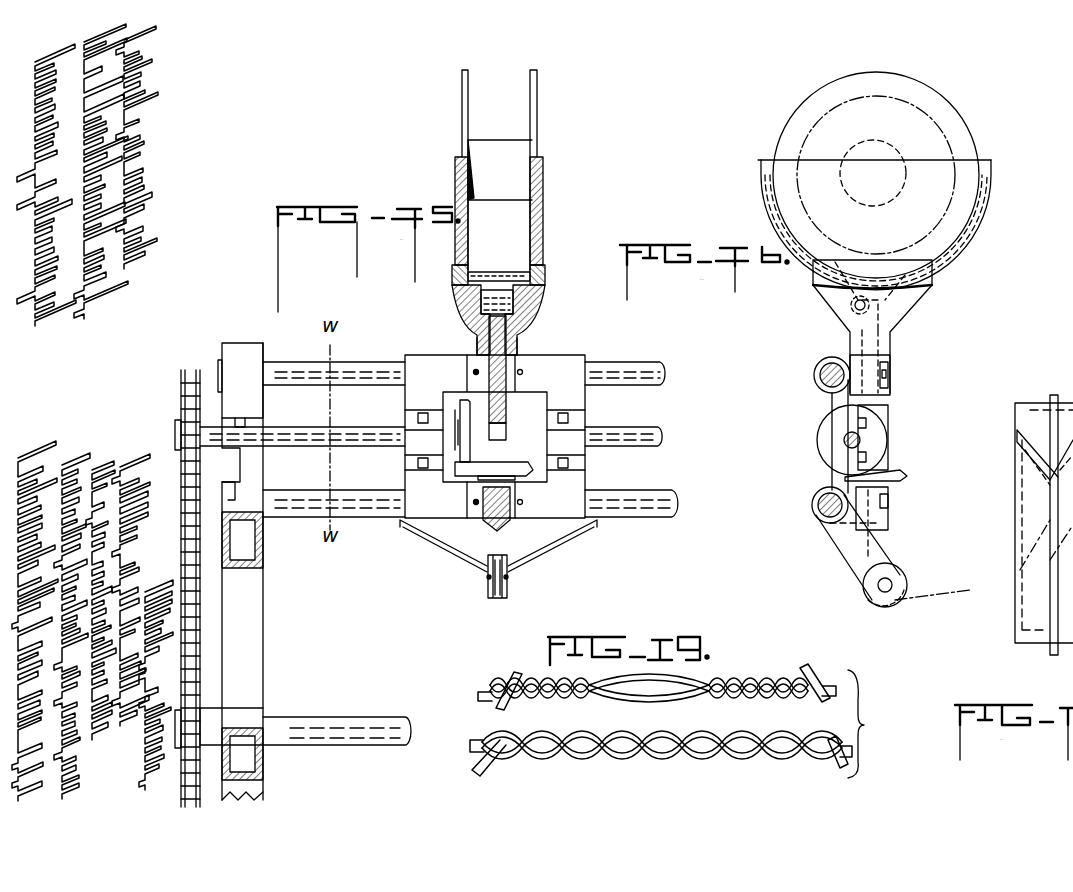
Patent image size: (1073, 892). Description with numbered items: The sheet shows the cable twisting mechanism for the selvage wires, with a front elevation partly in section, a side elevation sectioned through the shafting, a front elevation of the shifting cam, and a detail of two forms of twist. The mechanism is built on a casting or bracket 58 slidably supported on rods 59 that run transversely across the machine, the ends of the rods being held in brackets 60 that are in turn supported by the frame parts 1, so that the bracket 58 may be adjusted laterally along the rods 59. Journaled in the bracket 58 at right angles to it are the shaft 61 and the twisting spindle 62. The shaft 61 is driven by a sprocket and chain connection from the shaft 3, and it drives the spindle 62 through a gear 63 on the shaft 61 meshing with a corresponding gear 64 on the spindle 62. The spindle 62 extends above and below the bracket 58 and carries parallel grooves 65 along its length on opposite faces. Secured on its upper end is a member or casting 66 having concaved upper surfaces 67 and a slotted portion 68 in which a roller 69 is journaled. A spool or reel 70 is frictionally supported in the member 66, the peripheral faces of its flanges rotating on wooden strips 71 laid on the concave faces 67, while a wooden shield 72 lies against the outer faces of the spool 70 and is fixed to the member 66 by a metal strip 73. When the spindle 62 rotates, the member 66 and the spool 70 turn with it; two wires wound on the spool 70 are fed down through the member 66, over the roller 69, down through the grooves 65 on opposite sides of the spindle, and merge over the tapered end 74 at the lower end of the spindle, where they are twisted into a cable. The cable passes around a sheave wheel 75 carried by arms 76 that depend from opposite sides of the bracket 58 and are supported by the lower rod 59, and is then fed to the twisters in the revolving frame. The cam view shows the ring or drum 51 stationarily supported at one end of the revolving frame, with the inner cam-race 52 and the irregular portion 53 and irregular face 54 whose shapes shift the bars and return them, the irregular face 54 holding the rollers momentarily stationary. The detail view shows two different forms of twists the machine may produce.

In FIG. 15, the frame parts 1 is at (243, 643).
In FIG. 15, the shaft 3 is at (350, 716).
In FIG. 17, the ring or drum 51 is at (1015, 632).
In FIG. 17, the cam-race 52 is at (1048, 645).
In FIG. 17, the irregular portion 53 is at (1018, 440).
In FIG. 17, the irregular face 54 is at (1030, 526).
In FIG. 15, the casting or bracket 58 is at (570, 366).
In FIG. 15, the rods 59 is at (362, 366).
In FIG. 16, the rods 59 is at (820, 375).
In FIG. 15, the brackets 60 is at (236, 352).
In FIG. 15, the shaft 61 is at (322, 440).
In FIG. 16, the shaft 61 is at (846, 441).
In FIG. 15, the twisting spindle 62 is at (500, 430).
In FIG. 16, the twisting spindle 62 is at (888, 412).
In FIG. 15, the gear 63 is at (452, 406).
In FIG. 16, the gear 63 is at (825, 447).
In FIG. 15, the gear 64 is at (470, 470).
In FIG. 16, the gear 64 is at (900, 470).
In FIG. 15, the parallel grooves 65 is at (512, 344).
In FIG. 16, the parallel grooves 65 is at (895, 400).
In FIG. 15, the member or casting 66 is at (470, 310).
In FIG. 16, the member or casting 66 is at (892, 335).
In FIG. 15, the concaved upper surfaces 67 is at (526, 278).
In FIG. 16, the concaved upper surfaces 67 is at (957, 258).
In FIG. 16, the slotted portion 68 is at (882, 314).
In FIG. 15, the roller 69 is at (535, 292).
In FIG. 16, the roller 69 is at (855, 306).
In FIG. 15, the spool or reel 70 is at (510, 153).
In FIG. 16, the spool or reel 70 is at (948, 132).
In FIG. 15, the wooden strips 71 is at (457, 292).
In FIG. 15, the outer casing or shield 72 is at (545, 187).
In FIG. 16, the outer casing or shield 72 is at (930, 210).
In FIG. 15, the metal strip 73 is at (545, 272).
In FIG. 16, the metal strip 73 is at (978, 166).
In FIG. 15, the tapered end 74 is at (498, 530).
In FIG. 16, the tapered end 74 is at (875, 522).
In FIG. 15, the sheave wheel 75 is at (512, 600).
In FIG. 16, the sheave wheel 75 is at (890, 606).
In FIG. 16, the arms 76 is at (860, 560).